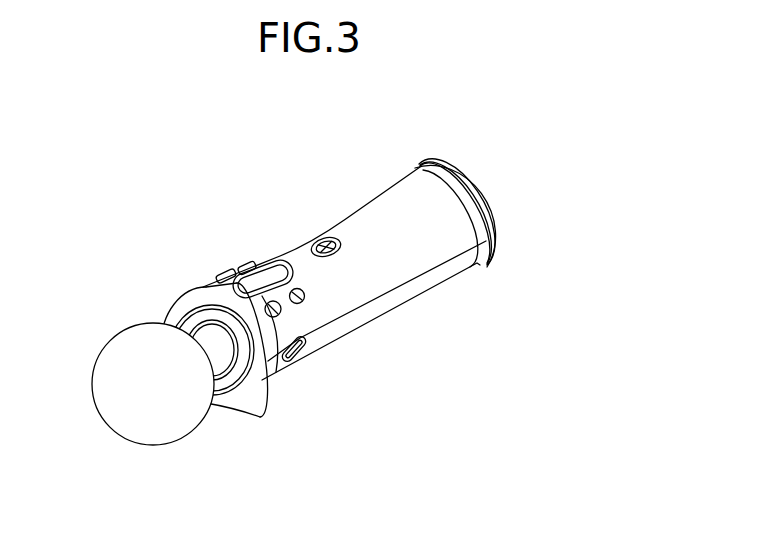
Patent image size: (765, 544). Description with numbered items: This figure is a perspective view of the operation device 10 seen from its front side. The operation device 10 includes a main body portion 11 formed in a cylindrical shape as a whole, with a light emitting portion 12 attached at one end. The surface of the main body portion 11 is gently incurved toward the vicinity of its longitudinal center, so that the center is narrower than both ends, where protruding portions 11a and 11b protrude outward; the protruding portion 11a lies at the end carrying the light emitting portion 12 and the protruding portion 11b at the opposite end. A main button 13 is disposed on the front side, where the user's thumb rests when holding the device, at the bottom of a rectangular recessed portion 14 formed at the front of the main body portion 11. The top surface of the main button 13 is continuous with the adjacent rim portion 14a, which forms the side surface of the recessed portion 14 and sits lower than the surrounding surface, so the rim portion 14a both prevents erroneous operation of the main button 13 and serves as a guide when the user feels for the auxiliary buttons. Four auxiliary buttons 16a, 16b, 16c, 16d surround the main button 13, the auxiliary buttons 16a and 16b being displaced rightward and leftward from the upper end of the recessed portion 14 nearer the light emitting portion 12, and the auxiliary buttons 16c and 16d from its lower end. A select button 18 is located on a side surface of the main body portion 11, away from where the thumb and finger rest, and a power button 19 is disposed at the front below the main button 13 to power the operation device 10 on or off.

The operation device 10 is at (302, 325).
The main body portion 11 is at (310, 288).
The protruding portion 11a is at (184, 299).
The protruding portion 11b is at (487, 266).
The light emitting portion 12 is at (155, 436).
The main button 13 is at (267, 276).
The recessed portion 14 is at (308, 290).
The rim portion 14a is at (300, 282).
The auxiliary button 16a is at (218, 273).
The auxiliary button 16b is at (272, 318).
The auxiliary button 16c is at (248, 262).
The auxiliary button 16d is at (300, 304).
The select button 18 is at (286, 363).
The power button 19 is at (326, 238).